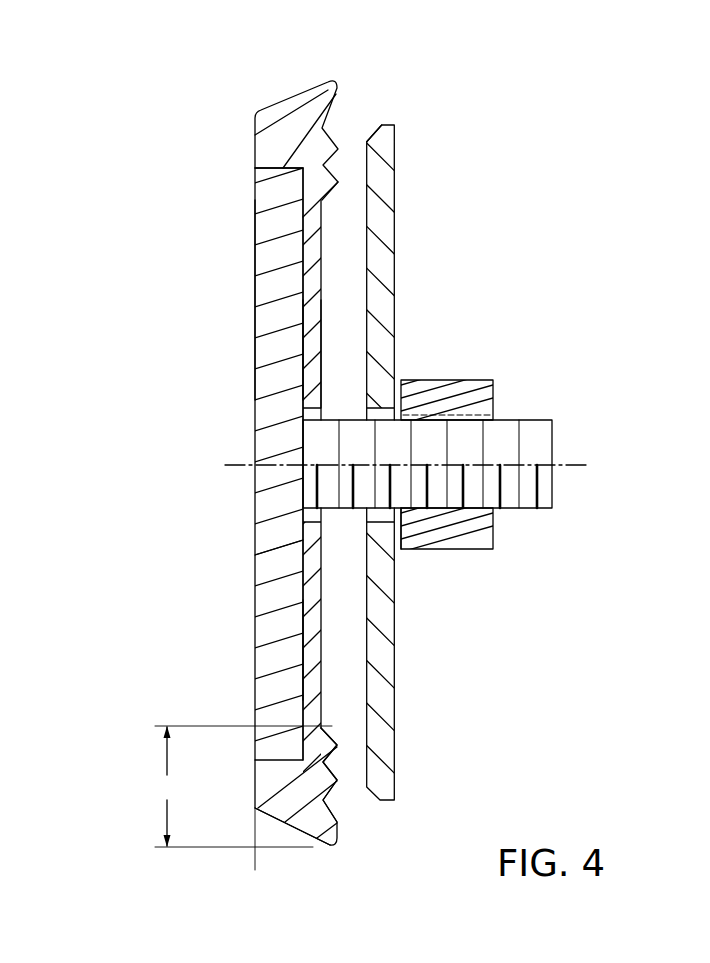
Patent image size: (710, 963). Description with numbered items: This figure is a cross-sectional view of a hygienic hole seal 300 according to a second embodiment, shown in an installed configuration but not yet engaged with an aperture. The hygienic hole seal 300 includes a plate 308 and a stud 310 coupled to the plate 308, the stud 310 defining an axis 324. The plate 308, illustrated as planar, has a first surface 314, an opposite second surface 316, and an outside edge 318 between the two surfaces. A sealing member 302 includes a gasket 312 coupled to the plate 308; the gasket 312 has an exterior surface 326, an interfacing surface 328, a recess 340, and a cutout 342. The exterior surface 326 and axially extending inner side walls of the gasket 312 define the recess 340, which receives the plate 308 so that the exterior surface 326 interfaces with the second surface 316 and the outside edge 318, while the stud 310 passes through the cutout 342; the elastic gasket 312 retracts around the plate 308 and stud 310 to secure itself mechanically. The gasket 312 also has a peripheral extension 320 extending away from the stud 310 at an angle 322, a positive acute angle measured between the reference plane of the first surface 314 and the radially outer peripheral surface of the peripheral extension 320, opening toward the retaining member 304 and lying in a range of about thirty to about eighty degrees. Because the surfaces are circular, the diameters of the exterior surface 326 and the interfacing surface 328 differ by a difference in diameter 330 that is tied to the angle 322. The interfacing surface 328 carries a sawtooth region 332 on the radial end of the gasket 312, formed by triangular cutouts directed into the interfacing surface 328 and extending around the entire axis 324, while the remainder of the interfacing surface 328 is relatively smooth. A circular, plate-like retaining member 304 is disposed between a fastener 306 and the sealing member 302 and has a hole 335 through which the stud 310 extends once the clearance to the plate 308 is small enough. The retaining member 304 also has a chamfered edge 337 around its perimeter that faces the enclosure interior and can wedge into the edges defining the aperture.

The hygienic hole seal 300 is at (178, 76).
The sealing member 302 is at (237, 549).
The retaining member 304 is at (383, 656).
The fastener 306 is at (492, 541).
The plate 308 is at (280, 252).
The stud 310 is at (538, 430).
The gasket 312 is at (313, 273).
The first surface 314 is at (255, 293).
The second surface 316 is at (303, 375).
The outside edge 318 is at (283, 167).
The peripheral extension 320 is at (305, 93).
The angle 322 is at (269, 825).
The axis 324 is at (563, 465).
The exterior surface 326 is at (300, 658).
The interfacing surface 328 is at (323, 352).
The difference in diameter 330 is at (239, 798).
The sawtooth region 332 is at (341, 767).
The hole 335 is at (402, 516).
The chamfered edge 337 is at (363, 118).
The recess 340 is at (284, 558).
The cutout 342 is at (325, 416).